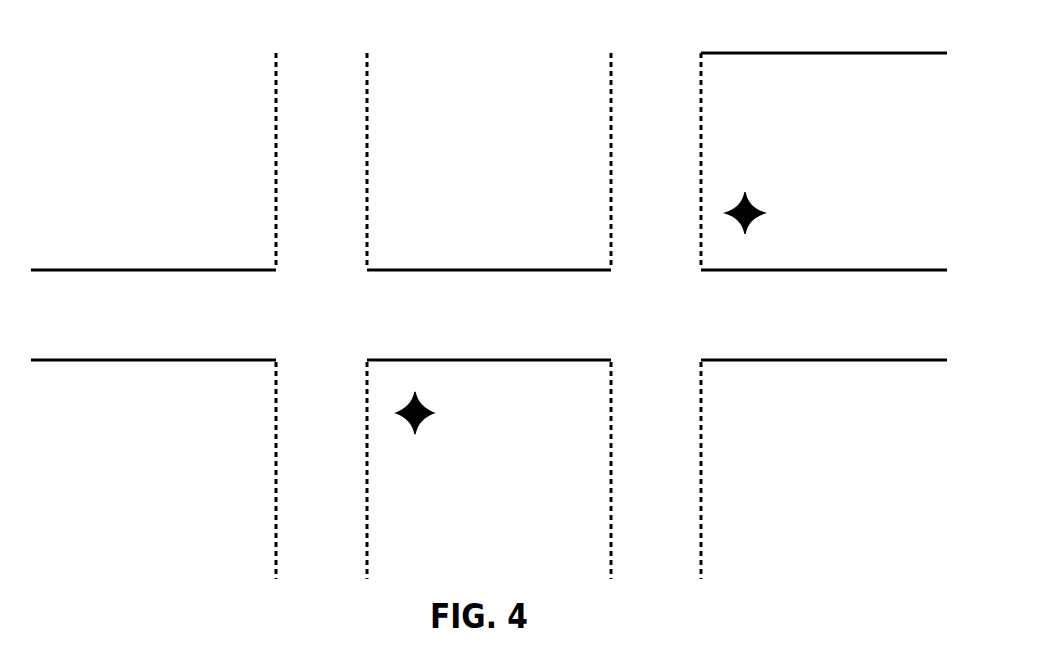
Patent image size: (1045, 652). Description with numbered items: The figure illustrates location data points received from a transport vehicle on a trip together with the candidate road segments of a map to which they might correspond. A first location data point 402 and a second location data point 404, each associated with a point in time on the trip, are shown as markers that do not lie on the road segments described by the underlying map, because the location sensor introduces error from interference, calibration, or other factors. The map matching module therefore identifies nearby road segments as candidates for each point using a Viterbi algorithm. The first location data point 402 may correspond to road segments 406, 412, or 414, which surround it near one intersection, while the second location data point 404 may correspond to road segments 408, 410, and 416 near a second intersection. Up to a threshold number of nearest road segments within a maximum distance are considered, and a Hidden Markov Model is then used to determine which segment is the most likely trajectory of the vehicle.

The first location data point 402 is at (436, 415).
The second location data point 404 is at (770, 208).
The road segment 406 is at (511, 326).
The road segment 408 is at (632, 152).
The road segment 410 is at (834, 321).
The road segment 412 is at (635, 481).
The road segment 414 is at (302, 481).
The road segment 416 is at (834, 30).